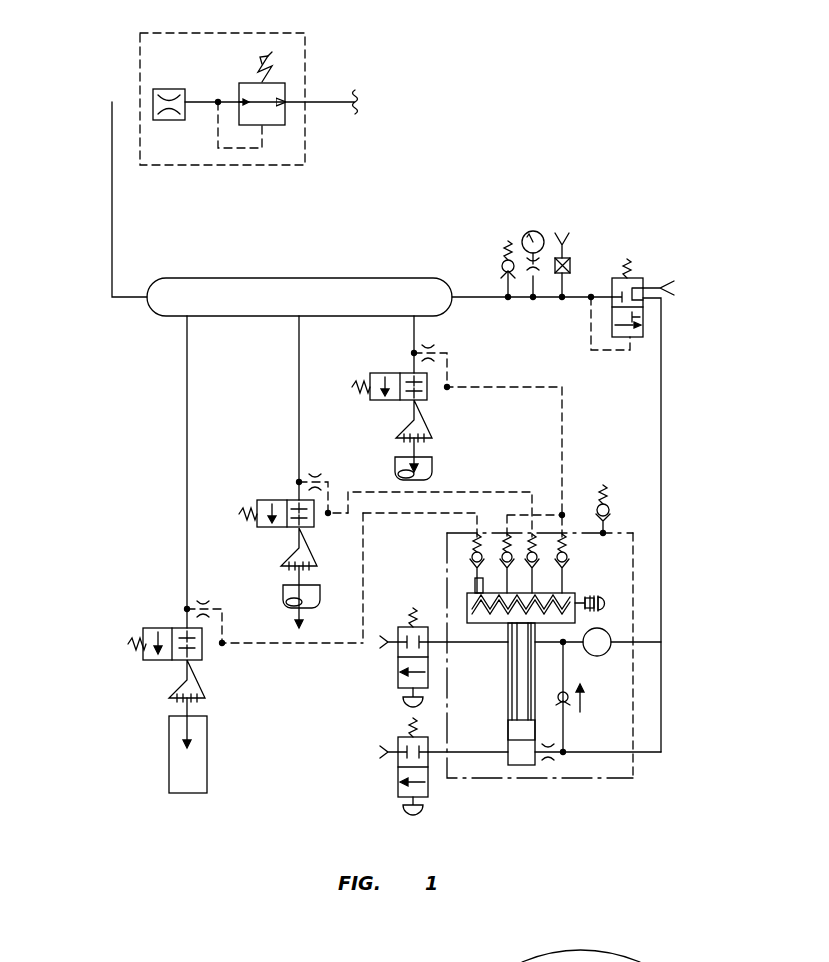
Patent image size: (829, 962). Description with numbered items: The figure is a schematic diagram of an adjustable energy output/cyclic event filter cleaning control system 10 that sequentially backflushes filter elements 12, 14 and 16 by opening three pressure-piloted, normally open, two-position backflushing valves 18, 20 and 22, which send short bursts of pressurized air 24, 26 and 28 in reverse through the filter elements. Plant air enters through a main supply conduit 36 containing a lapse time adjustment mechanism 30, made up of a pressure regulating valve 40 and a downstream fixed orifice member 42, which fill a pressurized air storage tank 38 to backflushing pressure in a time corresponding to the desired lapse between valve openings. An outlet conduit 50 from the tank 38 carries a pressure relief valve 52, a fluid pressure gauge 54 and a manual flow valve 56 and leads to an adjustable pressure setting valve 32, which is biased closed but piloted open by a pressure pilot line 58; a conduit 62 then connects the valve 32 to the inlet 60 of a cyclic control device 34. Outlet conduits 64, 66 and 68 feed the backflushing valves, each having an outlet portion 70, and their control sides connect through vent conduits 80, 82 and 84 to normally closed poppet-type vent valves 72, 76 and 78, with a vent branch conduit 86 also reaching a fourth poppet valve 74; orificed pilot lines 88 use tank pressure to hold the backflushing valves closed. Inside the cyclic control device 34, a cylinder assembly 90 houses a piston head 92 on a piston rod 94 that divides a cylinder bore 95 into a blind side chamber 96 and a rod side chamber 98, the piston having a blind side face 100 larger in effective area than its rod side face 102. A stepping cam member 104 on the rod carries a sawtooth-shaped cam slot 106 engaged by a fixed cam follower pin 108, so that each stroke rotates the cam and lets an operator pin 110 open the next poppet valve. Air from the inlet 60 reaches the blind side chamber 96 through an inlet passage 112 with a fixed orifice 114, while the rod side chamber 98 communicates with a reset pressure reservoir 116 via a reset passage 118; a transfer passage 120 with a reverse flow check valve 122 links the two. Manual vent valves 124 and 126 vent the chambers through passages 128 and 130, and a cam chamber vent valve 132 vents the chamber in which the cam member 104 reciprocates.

The adjustable energy output/cyclic event filter cleaning control system 10 is at (114, 469).
The filter element 12 is at (207, 770).
The filter element 14 is at (320, 596).
The filter element 16 is at (432, 470).
The filter backflushing valve 18 is at (171, 615).
The filter backflushing valve 20 is at (283, 499).
The filter backflushing valve 22 is at (387, 372).
The burst of pressurized air 24 is at (190, 712).
The burst of pressurized air 26 is at (302, 610).
The burst of pressurized air 28 is at (420, 449).
The lapse time adjustment mechanism 30 is at (139, 54).
The adjustable pressure setting valve 32 is at (646, 276).
The cyclic control device 34 is at (636, 532).
The main supply conduit 36 is at (331, 105).
The pressurized air storage tank 38 is at (290, 278).
The pressure regulating valve 40 is at (280, 83).
The fixed orifice member 42 is at (172, 89).
The outlet conduit 50 is at (471, 299).
The pressure relief valve 52 is at (500, 268).
The fluid pressure gauge 54 is at (528, 232).
The manual flow valve 56 is at (568, 262).
The pressure pilot line 58 is at (590, 332).
The inlet of the cyclic control device 60 is at (662, 754).
The conduit 62 is at (661, 430).
The outlet conduit 64 is at (187, 411).
The outlet conduit 66 is at (299, 411).
The outlet conduit 68 is at (414, 336).
The outlet portion 70 is at (396, 438).
The poppet-type vent valve 72 is at (471, 562).
The fourth poppet valve 74 is at (507, 570).
The poppet-type vent valve 76 is at (540, 568).
The poppet-type vent valve 78 is at (570, 556).
The vent conduit 80 is at (345, 645).
The vent conduit 82 is at (500, 491).
The vent conduit 84 is at (562, 425).
The vent branch conduit 86 is at (548, 510).
The orificed pilot line 88 is at (447, 360).
The cylinder assembly 90 is at (633, 620).
The piston head 92 is at (508, 740).
The piston rod 94 is at (517, 672).
The cylinder bore 95 is at (510, 695).
The blind side chamber 96 is at (522, 767).
The rod side chamber 98 is at (508, 655).
The blind side face 100 is at (520, 758).
The rod side face 102 is at (510, 720).
The stepping cam member 104 is at (467, 601).
The sawtooth-shaped cam slot 106 is at (497, 610).
The cam follower pin 108 is at (602, 605).
The operator pin 110 is at (475, 583).
The inlet passage 112 is at (592, 756).
The fixed orifice 114 is at (549, 760).
The reset pressure reservoir 116 is at (612, 645).
The reset passage 118 is at (583, 650).
The transfer passage 120 is at (566, 735).
The reverse flow check valve 122 is at (572, 702).
The manual vent valve 124 is at (398, 790).
The manual vent valve 126 is at (398, 680).
The conduit or passage 128 is at (438, 753).
The conduit or passage 130 is at (415, 700).
The cam chamber vent valve 132 is at (607, 503).